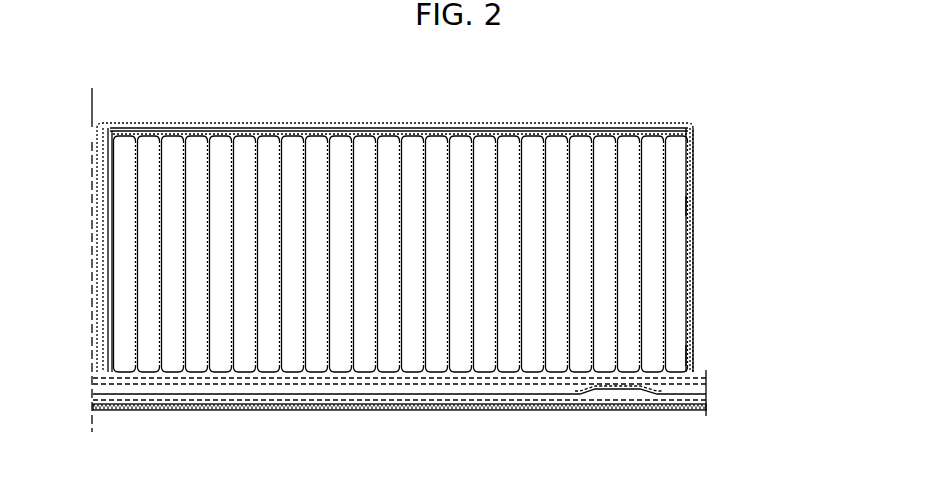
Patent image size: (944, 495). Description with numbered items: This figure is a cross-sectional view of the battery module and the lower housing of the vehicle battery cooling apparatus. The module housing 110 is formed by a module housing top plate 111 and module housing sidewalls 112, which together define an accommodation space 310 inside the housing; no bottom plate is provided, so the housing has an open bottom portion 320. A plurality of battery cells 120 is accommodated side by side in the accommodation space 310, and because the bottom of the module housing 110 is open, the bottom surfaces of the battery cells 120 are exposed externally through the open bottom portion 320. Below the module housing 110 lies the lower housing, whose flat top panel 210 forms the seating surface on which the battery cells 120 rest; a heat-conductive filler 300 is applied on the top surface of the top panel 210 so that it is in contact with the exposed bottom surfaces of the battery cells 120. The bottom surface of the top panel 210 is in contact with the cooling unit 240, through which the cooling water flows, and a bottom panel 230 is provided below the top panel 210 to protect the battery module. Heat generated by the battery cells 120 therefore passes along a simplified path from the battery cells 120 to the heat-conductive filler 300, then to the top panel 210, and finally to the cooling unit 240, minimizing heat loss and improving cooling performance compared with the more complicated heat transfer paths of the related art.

The module housing 110 is at (701, 117).
The module housing top plate 111 is at (258, 123).
The module housing sidewalls 112 is at (695, 314).
The battery cells 120 is at (672, 260).
The top panel 210 is at (706, 378).
The bottom panel 230 is at (706, 410).
The cooling unit 240 is at (706, 401).
The heat-conductive filler 300 is at (352, 374).
The accommodation space 310 is at (686, 221).
The open bottom portion 320 is at (688, 365).